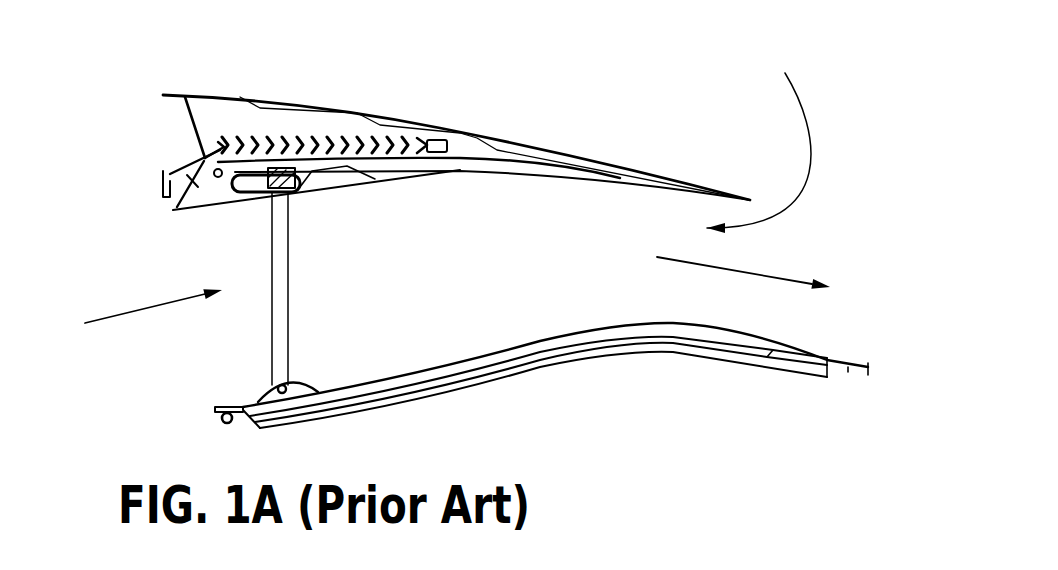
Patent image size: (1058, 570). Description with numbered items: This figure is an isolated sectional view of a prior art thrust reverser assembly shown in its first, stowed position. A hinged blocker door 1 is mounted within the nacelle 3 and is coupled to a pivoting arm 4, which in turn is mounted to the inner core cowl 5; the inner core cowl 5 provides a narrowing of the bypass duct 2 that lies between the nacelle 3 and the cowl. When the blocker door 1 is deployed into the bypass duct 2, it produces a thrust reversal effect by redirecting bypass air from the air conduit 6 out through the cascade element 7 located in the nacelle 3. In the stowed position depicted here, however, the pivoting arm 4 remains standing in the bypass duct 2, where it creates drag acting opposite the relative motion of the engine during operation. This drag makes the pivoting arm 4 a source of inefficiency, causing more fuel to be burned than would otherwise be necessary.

The blocker door 1 is at (333, 175).
The bypass duct 2 is at (530, 277).
The nacelle 3 is at (170, 93).
The pivoting arm 4 is at (282, 302).
The inner core cowl 5 is at (427, 383).
The air conduit 6 is at (759, 140).
The cascade element 7 is at (330, 137).